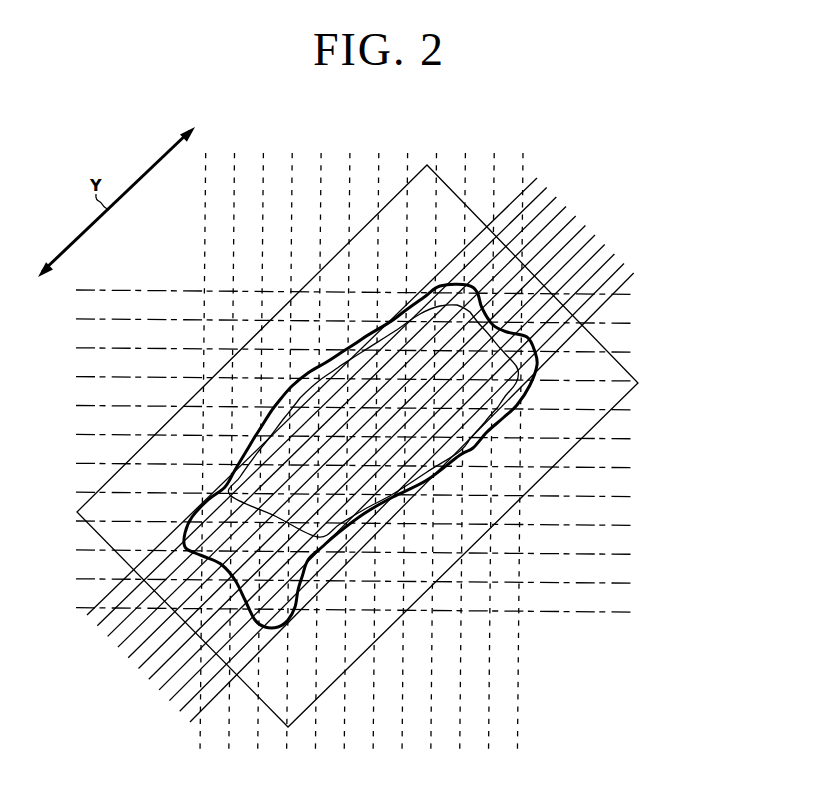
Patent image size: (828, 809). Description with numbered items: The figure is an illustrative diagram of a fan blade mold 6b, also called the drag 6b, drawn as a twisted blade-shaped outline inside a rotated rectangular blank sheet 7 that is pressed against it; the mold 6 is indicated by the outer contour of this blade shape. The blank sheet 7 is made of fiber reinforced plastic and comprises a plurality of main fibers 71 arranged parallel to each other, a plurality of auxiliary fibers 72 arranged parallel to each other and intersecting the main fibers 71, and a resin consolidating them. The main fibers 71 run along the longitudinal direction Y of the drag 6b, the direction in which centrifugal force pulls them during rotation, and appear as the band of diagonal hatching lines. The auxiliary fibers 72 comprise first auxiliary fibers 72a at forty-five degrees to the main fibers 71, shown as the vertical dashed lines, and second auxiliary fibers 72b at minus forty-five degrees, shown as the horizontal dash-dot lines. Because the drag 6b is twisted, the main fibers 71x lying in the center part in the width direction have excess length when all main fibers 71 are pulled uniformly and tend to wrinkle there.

The mold 6 is at (367, 335).
The fan blade mold (drag) 6b is at (323, 365).
The blank sheet 7 is at (612, 419).
The main fibers 71 is at (381, 450).
The main fibers in the center part in the width direction 71x is at (572, 212).
The auxiliary fibers 72 is at (361, 454).
The first auxiliary fibers 72a is at (518, 665).
The second auxiliary fibers 72b is at (555, 612).